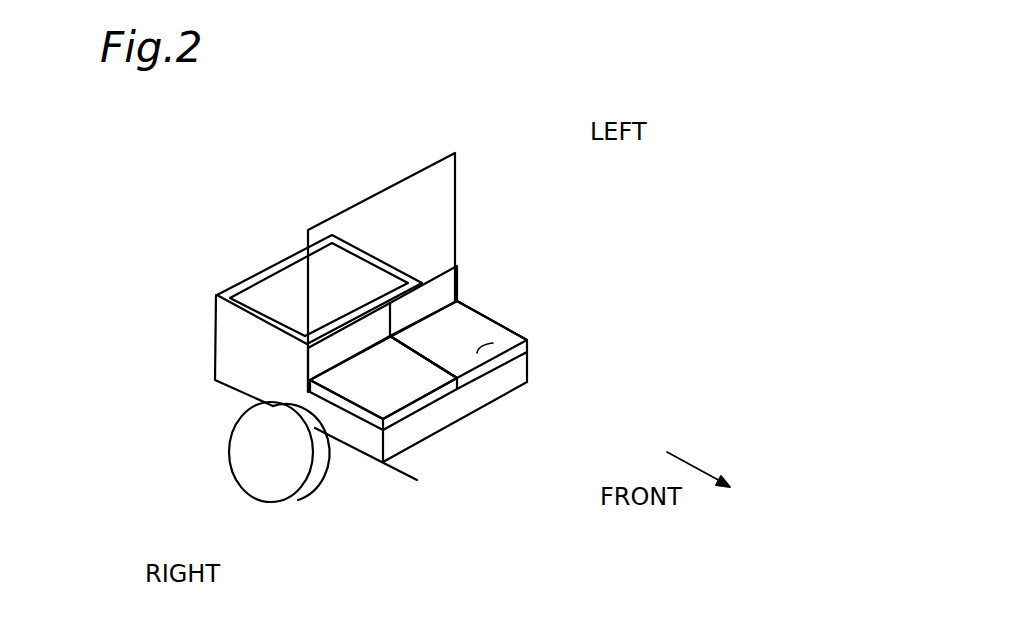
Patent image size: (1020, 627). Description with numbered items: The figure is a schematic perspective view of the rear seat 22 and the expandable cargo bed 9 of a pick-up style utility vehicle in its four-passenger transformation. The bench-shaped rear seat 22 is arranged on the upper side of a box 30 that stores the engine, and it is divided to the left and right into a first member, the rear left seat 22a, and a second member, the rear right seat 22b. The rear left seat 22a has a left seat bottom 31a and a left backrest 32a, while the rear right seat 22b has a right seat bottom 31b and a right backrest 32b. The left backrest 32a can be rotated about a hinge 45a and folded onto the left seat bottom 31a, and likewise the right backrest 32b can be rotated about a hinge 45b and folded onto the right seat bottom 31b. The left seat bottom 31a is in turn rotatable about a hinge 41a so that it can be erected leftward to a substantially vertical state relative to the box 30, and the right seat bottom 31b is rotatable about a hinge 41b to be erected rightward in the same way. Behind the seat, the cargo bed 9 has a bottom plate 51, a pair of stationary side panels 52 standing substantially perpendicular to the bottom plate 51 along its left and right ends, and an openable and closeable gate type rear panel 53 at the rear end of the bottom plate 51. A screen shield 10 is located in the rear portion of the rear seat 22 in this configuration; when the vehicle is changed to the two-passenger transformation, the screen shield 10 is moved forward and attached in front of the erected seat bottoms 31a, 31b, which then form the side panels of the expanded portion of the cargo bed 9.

The cargo bed 9 is at (278, 283).
The screen shield 10 is at (395, 197).
The rear seat 22 is at (401, 354).
The rear left seat 22a is at (515, 315).
The rear right seat 22b is at (357, 435).
The box 30 is at (477, 428).
The left seat bottom 31a is at (517, 366).
The right seat bottom 31b is at (385, 428).
The left backrest 32a is at (432, 298).
The right backrest 32b is at (342, 336).
The hinge 41a is at (530, 343).
The hinge 41b is at (371, 425).
The hinge 45a is at (402, 327).
The hinge 45b is at (308, 362).
The bottom plate 51 is at (303, 315).
The stationary side panels 52 is at (253, 362).
The rear panel 53 is at (252, 297).